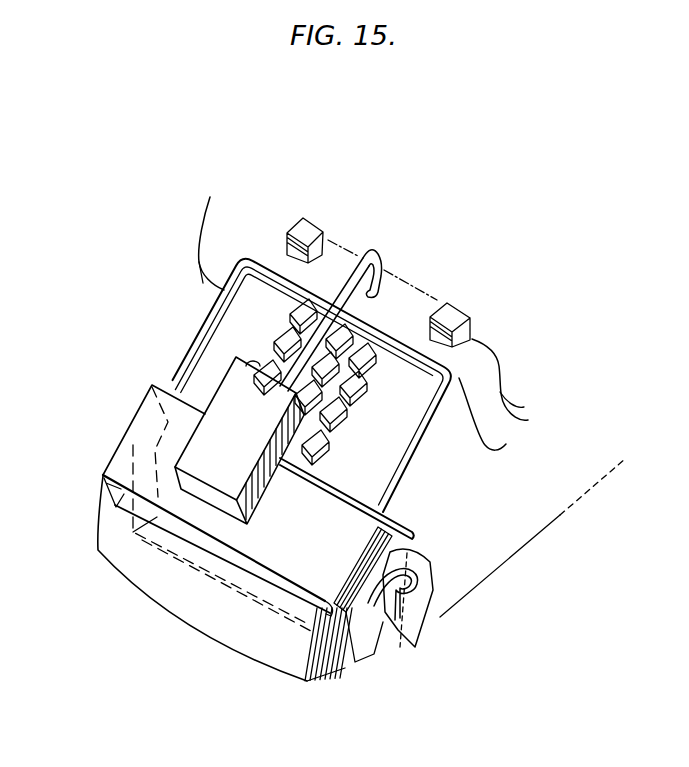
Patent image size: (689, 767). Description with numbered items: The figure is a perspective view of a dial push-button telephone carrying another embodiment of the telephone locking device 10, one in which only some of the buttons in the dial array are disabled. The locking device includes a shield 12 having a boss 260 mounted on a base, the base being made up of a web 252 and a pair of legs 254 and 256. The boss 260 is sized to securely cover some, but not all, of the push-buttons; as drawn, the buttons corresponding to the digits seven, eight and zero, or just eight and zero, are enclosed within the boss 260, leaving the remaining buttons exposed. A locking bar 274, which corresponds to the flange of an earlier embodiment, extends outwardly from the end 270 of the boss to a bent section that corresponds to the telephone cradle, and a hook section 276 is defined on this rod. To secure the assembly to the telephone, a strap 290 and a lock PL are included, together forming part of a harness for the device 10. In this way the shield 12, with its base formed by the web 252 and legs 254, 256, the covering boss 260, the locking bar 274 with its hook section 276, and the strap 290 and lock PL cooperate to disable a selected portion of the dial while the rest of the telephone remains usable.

The device 10 is at (153, 306).
The shield 12 is at (260, 317).
The web 252 is at (170, 446).
The leg 254 is at (103, 478).
The leg 256 is at (355, 612).
The boss 260 is at (225, 400).
The end of the boss 270 is at (250, 363).
The locking bar 274 is at (344, 268).
The hook section 276 is at (394, 256).
The strap 290 is at (383, 638).
The lock PL is at (425, 617).